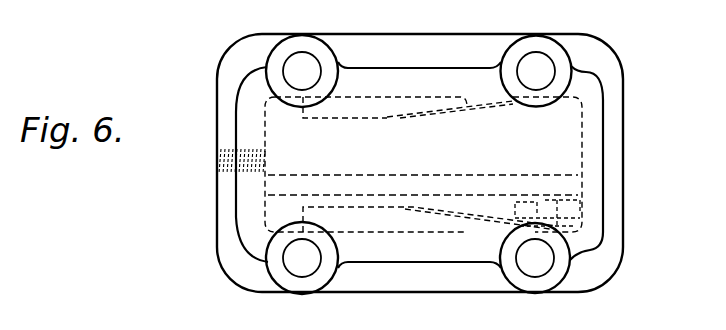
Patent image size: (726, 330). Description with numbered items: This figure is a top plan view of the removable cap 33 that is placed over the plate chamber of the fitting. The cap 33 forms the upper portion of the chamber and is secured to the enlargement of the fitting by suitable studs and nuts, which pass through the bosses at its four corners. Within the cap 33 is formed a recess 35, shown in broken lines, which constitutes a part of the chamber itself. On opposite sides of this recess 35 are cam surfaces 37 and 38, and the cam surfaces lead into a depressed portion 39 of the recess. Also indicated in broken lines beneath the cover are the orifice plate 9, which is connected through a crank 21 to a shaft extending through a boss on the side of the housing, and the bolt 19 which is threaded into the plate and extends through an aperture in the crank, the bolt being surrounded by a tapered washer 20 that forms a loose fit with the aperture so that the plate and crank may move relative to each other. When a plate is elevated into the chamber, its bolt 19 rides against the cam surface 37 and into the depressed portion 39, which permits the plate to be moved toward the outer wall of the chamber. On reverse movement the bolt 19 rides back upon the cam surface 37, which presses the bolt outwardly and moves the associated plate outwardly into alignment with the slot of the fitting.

The removable cap 33 is at (419, 42).
The recess 35 is at (568, 150).
The depressed portion 39 is at (575, 98).
The cam surface 38 is at (387, 118).
The cam surface 37 is at (441, 210).
The orifice plate 9 is at (383, 176).
The tapered washer 20 is at (584, 184).
The crank 21 is at (580, 210).
The bolt 19 is at (580, 227).